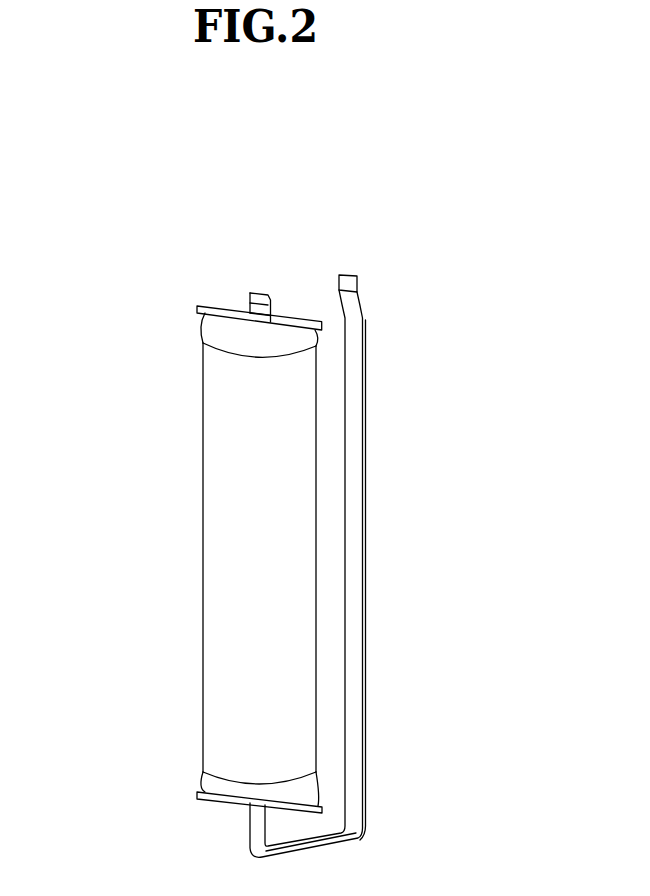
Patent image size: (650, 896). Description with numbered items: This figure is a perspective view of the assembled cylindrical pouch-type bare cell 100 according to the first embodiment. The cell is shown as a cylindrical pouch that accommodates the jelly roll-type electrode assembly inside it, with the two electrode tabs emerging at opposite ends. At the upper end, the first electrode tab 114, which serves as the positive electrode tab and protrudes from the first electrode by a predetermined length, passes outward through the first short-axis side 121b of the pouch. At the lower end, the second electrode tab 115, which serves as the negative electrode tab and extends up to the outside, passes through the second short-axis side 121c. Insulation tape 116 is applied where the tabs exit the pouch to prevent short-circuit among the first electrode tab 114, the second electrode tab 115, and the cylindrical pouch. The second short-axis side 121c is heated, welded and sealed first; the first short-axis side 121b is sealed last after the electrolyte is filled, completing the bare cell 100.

The cylindrical pouch-type bare cell 100 is at (104, 517).
The first electrode tab 114 is at (268, 296).
The second electrode tab 115 is at (348, 283).
The insulation tape 116 is at (250, 308).
The first short-axis side 121b is at (197, 306).
The second short-axis side 121c is at (197, 793).